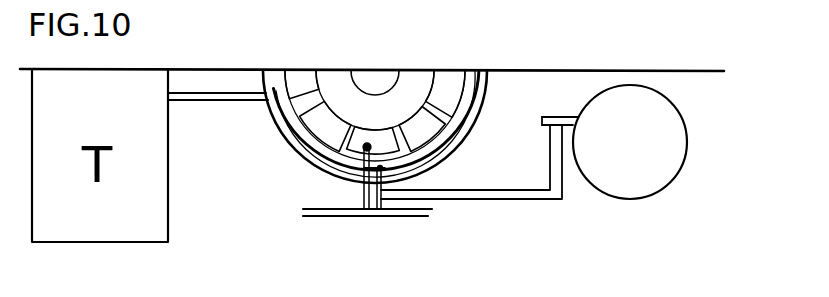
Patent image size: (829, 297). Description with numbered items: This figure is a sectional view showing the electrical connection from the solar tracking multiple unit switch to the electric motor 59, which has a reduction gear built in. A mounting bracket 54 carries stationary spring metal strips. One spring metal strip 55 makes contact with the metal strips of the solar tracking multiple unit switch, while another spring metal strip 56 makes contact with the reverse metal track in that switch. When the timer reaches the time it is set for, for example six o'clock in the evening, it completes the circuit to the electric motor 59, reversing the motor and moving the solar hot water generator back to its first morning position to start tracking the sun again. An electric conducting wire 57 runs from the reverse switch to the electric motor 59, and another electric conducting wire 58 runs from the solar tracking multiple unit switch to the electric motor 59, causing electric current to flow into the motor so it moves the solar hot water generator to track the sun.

The mounting bracket 54 is at (405, 218).
The spring metal strip 55 is at (335, 183).
The spring metal strip 56 is at (427, 182).
The electric conducting wire 57 is at (512, 189).
The electric conducting wire 58 is at (524, 200).
The electric motor 59 is at (630, 158).